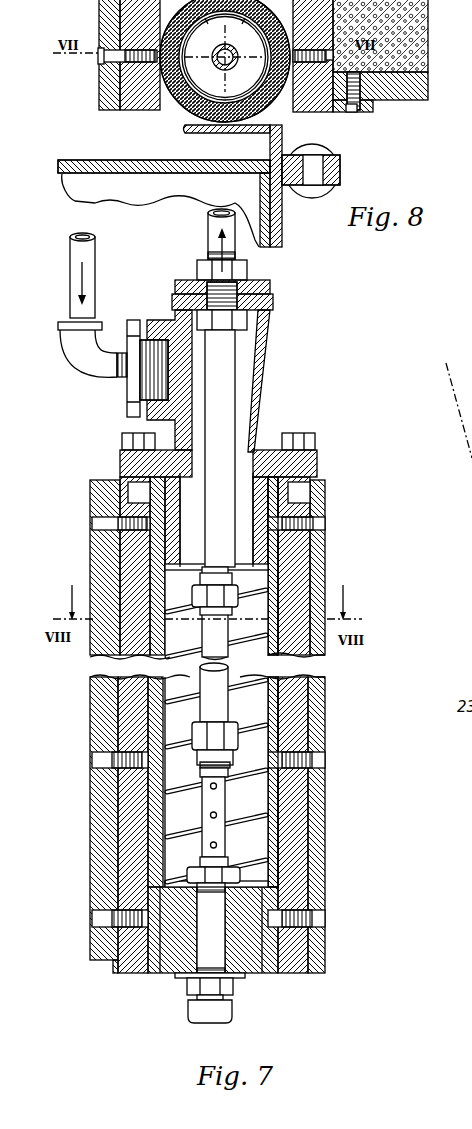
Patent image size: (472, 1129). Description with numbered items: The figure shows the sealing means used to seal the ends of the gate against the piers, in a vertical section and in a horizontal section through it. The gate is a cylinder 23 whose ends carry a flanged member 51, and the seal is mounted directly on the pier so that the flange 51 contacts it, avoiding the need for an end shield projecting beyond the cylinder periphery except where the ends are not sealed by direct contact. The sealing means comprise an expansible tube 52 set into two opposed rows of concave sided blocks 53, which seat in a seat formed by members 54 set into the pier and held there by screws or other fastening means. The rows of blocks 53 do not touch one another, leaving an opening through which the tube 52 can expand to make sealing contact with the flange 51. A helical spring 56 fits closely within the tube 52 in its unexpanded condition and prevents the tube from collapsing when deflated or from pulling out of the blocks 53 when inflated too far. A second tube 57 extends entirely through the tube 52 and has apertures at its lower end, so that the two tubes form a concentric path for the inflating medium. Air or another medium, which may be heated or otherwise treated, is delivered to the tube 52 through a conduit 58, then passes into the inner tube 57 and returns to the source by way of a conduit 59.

In FIG. 8, the cylinder 23 is at (278, 244).
In FIG. 8, the flanged member 51 is at (231, 133).
In FIG. 8, the expansible tube 52 is at (184, 116).
In FIG. 7, the expansible tube 52 is at (277, 678).
In FIG. 8, the concave sided blocks 53 is at (135, 110).
In FIG. 7, the concave sided blocks 53 is at (112, 827).
In FIG. 8, the members 54 is at (99, 85).
In FIG. 7, the members 54 is at (90, 556).
In FIG. 8, the helical spring 56 is at (192, 26).
In FIG. 7, the helical spring 56 is at (230, 694).
In FIG. 8, the second tube 57 is at (225, 71).
In FIG. 7, the second tube 57 is at (201, 661).
In FIG. 7, the conduit 58 is at (96, 270).
In FIG. 7, the conduit 59 is at (208, 235).